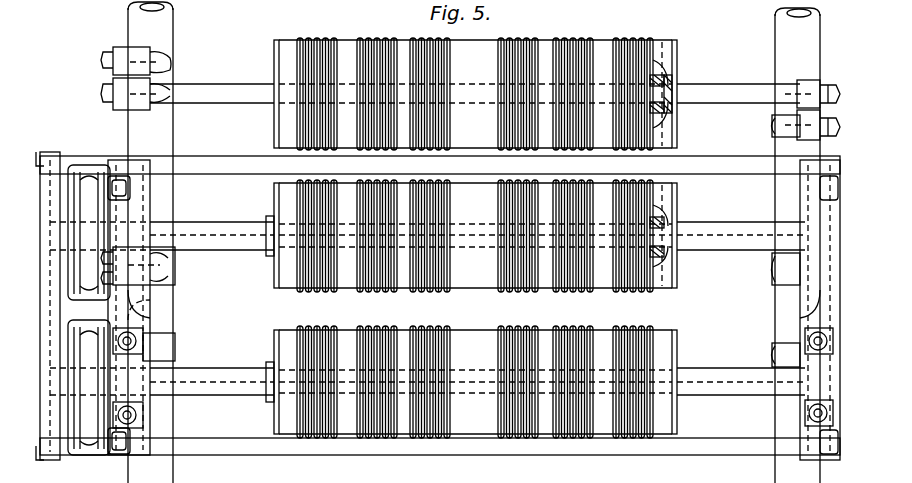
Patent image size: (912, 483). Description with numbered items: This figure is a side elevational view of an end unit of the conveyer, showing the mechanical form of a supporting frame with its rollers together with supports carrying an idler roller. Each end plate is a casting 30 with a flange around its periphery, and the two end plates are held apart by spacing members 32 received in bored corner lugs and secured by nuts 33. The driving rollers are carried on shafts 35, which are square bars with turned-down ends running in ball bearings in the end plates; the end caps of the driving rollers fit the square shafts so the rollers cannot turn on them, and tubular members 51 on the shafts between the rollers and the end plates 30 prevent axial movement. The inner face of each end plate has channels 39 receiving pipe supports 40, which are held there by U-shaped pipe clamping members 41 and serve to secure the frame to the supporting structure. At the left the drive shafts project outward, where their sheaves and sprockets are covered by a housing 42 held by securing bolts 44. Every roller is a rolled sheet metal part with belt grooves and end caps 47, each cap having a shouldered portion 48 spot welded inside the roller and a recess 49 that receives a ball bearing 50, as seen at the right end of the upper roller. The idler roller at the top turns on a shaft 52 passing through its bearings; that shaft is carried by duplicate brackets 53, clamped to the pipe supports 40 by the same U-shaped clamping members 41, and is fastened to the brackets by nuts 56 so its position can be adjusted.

The casting 30 is at (150, 208).
The spacing members 32 is at (232, 148).
The nuts 33 is at (118, 458).
The shafts 35 is at (216, 226).
The channels 39 is at (134, 318).
The pipe supports 40 is at (165, 36).
The U-shaped pipe clamping members 41 is at (162, 268).
The housing 42 is at (72, 456).
The securing bolts 44 is at (40, 158).
The end caps 47 is at (660, 52).
The shouldered portion 48 is at (668, 50).
The recess 49 is at (668, 118).
The ball bearing 50 is at (672, 78).
The tubular members 51 is at (242, 254).
The shaft 52 is at (234, 74).
The brackets 53 is at (138, 48).
The nuts 56 is at (838, 96).